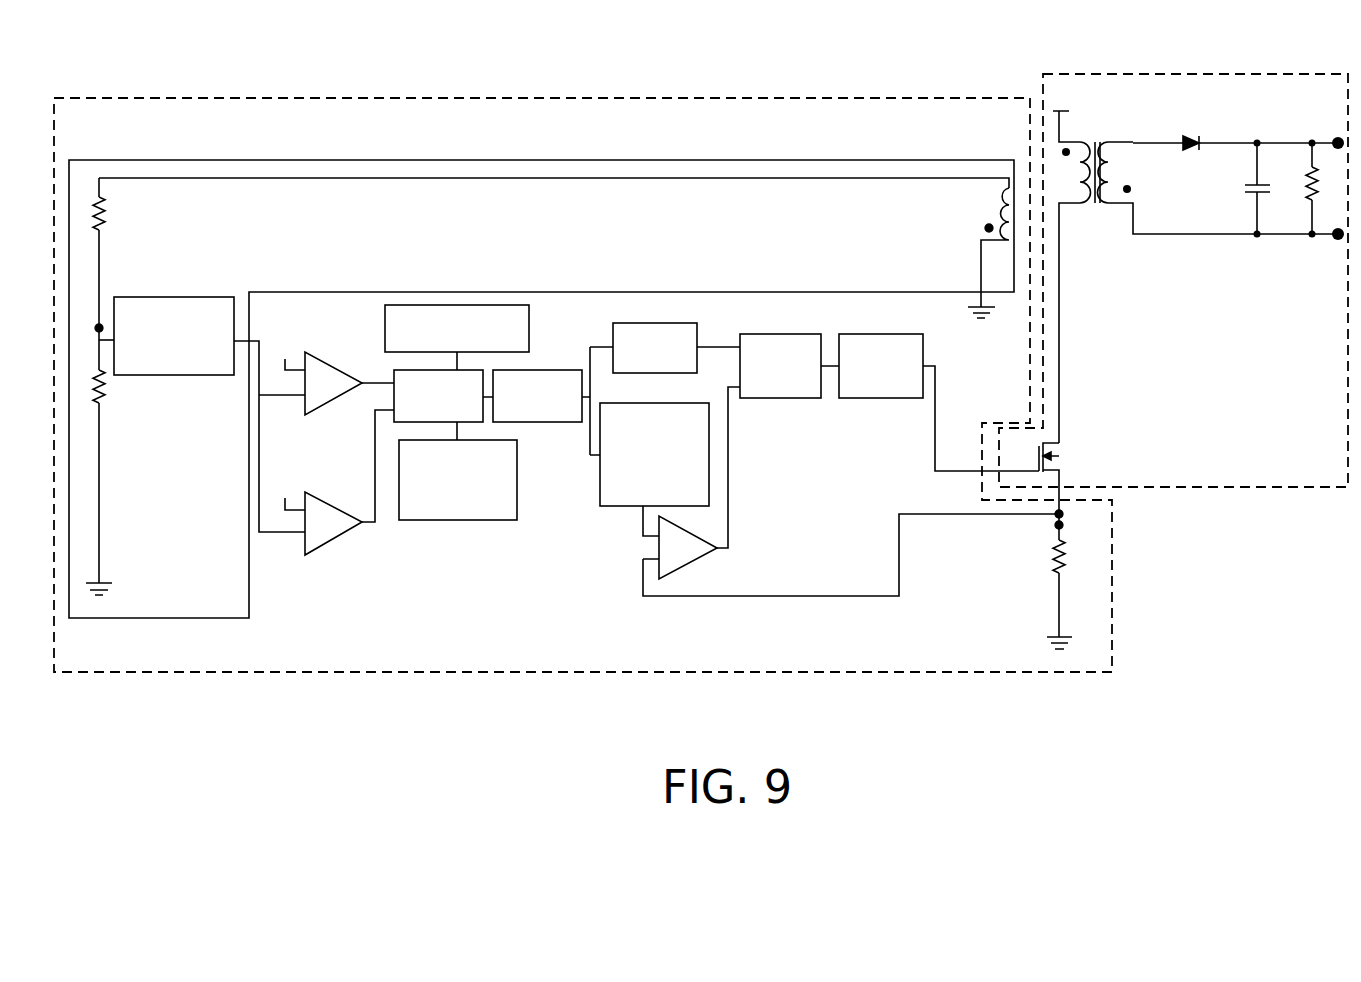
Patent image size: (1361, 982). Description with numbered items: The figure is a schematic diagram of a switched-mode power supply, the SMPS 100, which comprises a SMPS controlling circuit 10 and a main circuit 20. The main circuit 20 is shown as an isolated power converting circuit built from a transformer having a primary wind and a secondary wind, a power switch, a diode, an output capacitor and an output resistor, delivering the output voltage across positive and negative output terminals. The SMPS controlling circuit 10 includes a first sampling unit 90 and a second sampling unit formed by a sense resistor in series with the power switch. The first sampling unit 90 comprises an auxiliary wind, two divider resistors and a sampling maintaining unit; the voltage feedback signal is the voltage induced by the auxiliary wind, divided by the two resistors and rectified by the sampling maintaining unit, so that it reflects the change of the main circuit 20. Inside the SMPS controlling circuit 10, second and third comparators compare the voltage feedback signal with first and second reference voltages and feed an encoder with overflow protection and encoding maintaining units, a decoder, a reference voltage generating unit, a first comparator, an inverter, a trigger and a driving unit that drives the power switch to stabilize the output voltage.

The SMPS 100 is at (1293, 39).
The SMPS controlling circuit 10 is at (727, 98).
The main circuit 20 is at (1167, 74).
The first sampling unit 90 is at (612, 160).